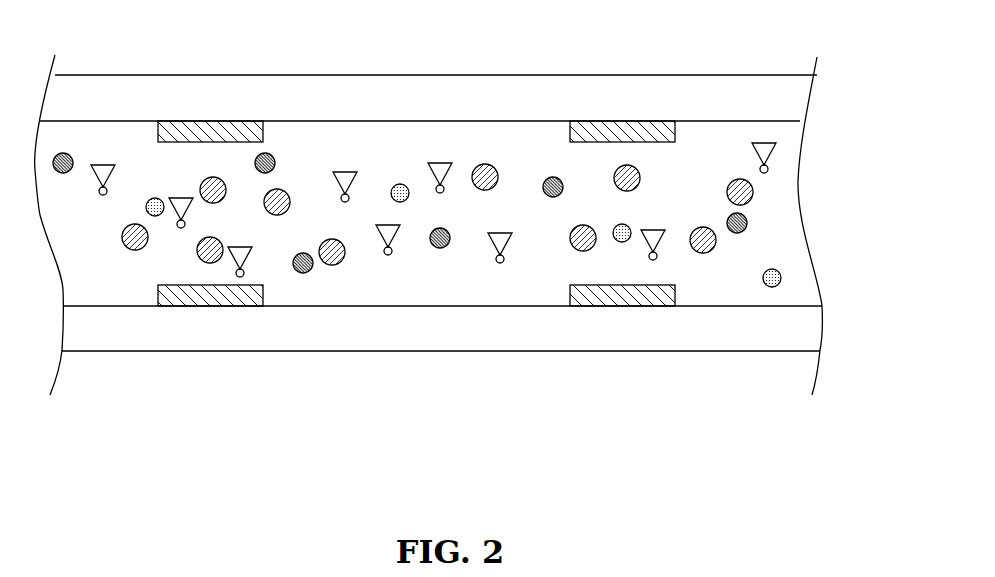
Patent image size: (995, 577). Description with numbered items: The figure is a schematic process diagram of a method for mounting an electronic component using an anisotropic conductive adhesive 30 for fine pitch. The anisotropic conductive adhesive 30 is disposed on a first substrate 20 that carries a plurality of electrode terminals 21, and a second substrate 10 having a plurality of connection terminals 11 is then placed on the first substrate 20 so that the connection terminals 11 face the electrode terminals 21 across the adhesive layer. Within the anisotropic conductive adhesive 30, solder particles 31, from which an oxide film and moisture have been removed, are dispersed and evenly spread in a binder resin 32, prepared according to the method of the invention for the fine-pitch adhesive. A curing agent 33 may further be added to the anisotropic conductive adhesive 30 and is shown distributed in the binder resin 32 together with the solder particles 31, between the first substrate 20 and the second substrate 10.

The second substrate 10 is at (579, 75).
The connection terminals 11 is at (650, 121).
The first substrate 20 is at (726, 333).
The electrode terminals 21 is at (631, 306).
The anisotropic conductive adhesive for fine pitch 30 is at (763, 258).
The solder particles 31 is at (753, 190).
The binder resin 32 is at (777, 148).
The curing agent 33 is at (748, 220).